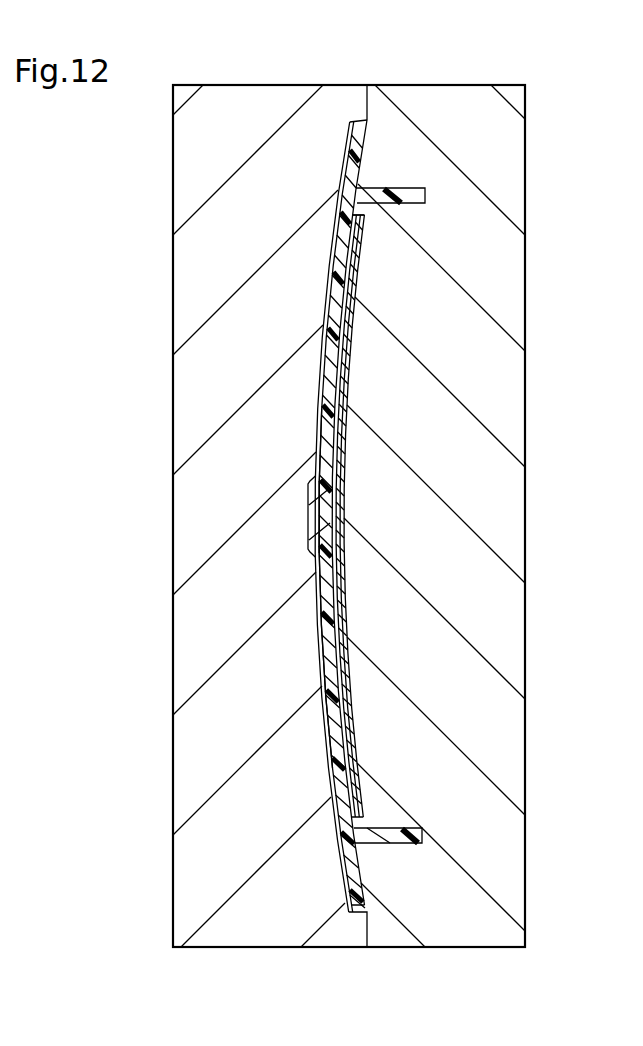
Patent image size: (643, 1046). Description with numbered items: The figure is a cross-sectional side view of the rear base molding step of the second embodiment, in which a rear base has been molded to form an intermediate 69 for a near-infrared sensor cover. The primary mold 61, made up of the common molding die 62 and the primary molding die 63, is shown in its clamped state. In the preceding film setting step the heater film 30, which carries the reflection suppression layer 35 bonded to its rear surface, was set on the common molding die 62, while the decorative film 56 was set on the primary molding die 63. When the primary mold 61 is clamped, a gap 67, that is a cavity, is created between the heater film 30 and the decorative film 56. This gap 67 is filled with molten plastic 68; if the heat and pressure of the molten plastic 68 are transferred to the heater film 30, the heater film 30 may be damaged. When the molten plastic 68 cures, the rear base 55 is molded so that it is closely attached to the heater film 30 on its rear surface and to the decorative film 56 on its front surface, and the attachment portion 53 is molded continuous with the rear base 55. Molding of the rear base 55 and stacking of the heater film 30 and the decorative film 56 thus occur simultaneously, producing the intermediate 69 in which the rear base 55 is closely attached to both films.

The heater film 30 is at (345, 308).
The reflection suppression layer 35 is at (345, 391).
The attachment portion 53 is at (424, 197).
The rear base 55 is at (285, 428).
The decorative film 56 is at (313, 426).
The primary mold 61 is at (396, 516).
The common molding die 62 is at (480, 135).
The primary molding die 63 is at (358, 107).
The gap 67 is at (356, 213).
The molten plastic 68 is at (333, 268).
The intermediate 69 is at (316, 745).